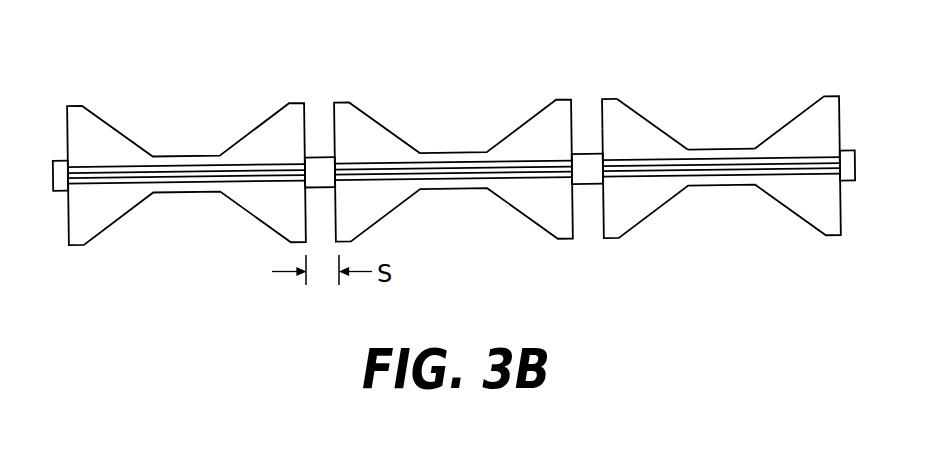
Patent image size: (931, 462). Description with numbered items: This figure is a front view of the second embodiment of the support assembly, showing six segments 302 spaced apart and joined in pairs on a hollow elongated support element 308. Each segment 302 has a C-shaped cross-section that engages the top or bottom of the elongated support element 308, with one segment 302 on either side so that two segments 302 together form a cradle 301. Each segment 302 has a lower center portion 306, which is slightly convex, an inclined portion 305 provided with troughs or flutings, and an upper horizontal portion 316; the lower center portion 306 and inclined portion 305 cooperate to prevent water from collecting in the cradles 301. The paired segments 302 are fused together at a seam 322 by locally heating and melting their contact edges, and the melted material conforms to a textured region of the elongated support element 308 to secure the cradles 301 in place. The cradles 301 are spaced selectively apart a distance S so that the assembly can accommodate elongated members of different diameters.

The cradle 301 is at (193, 125).
The segment 302 is at (642, 140).
The inclined portion 305 is at (642, 113).
The lower center portion 306 is at (727, 143).
The elongated support element 308 is at (848, 150).
The upper horizontal portion 316 is at (608, 97).
The seam 322 is at (92, 173).